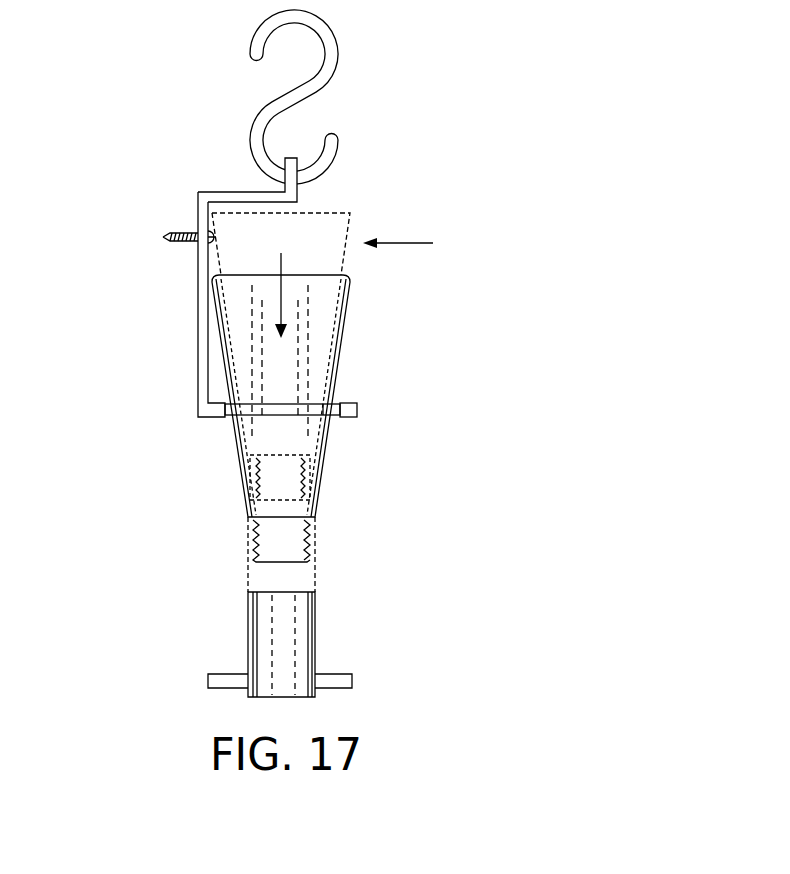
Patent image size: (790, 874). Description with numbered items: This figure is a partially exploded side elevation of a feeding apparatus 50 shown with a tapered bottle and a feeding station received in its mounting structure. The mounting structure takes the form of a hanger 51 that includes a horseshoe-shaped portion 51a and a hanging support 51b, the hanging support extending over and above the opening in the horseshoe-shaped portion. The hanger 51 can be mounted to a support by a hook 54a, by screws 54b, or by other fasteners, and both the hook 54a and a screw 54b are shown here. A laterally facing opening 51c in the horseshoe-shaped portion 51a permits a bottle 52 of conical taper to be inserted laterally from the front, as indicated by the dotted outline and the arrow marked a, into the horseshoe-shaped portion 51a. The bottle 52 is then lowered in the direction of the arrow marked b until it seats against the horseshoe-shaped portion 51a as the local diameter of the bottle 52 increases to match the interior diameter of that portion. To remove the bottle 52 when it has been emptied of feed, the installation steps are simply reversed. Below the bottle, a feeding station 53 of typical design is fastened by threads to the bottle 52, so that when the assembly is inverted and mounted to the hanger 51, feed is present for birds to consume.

The feeding apparatus 50 is at (384, 346).
The hanger 51 is at (177, 321).
The horseshoe-shaped portion 51a is at (212, 410).
The hanging support 51b is at (220, 197).
The laterally facing opening 51c is at (372, 412).
The bottle 52 is at (320, 470).
The feeding station 53 is at (303, 610).
The hook 54a is at (328, 68).
The screws 54b is at (158, 232).